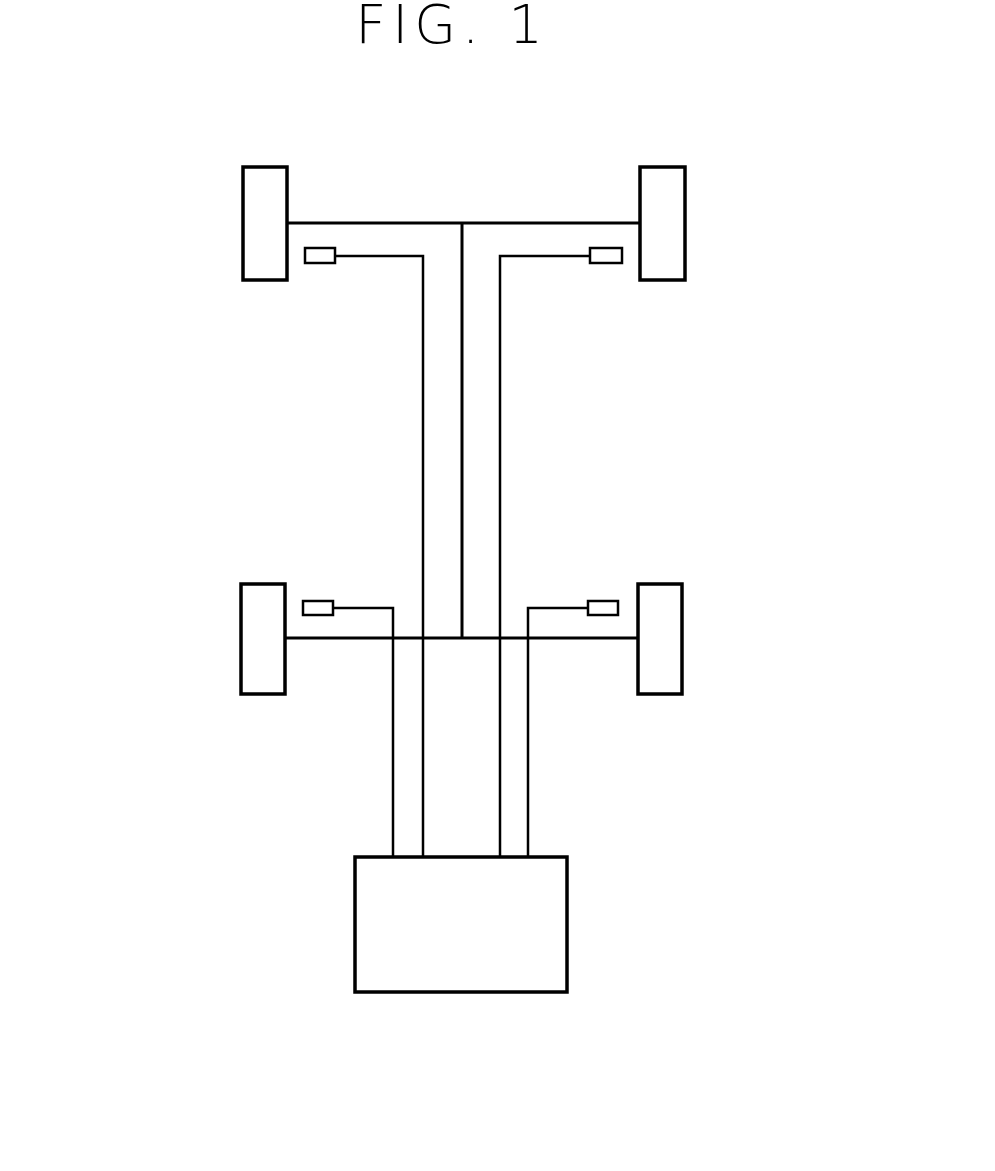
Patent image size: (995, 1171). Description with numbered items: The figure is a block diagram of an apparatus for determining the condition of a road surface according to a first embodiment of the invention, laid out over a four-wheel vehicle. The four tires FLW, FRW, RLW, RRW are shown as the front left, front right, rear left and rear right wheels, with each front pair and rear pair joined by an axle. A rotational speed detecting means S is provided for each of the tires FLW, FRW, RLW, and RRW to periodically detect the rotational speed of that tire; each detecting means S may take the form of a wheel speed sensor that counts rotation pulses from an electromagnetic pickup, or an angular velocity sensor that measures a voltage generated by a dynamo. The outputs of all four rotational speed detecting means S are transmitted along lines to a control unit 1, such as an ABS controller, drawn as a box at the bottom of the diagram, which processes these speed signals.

The control unit 1 is at (532, 940).
The rotational speed detecting means S is at (320, 264).
The tire FLW is at (258, 216).
The tire FRW is at (670, 216).
The tire RLW is at (258, 633).
The tire RRW is at (666, 632).